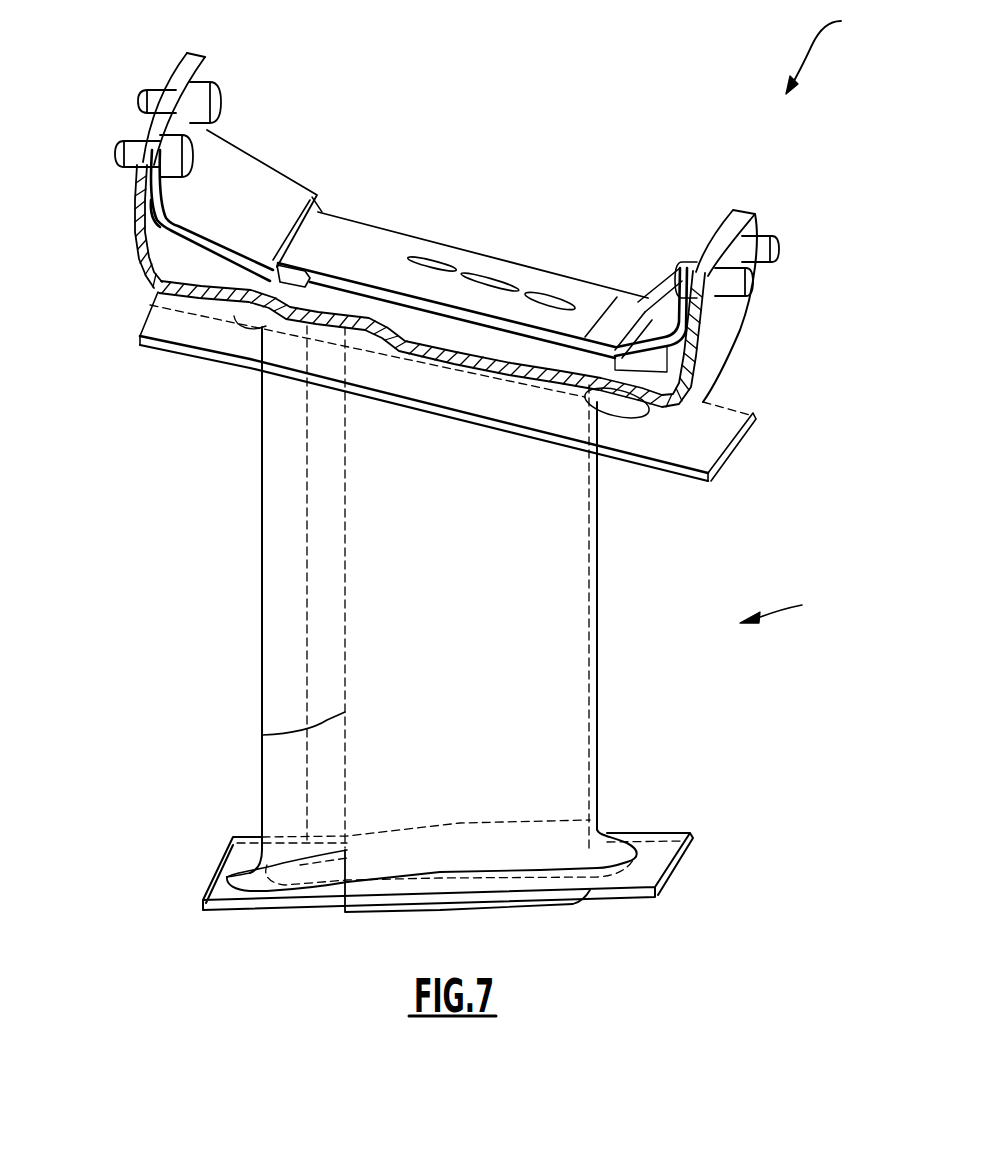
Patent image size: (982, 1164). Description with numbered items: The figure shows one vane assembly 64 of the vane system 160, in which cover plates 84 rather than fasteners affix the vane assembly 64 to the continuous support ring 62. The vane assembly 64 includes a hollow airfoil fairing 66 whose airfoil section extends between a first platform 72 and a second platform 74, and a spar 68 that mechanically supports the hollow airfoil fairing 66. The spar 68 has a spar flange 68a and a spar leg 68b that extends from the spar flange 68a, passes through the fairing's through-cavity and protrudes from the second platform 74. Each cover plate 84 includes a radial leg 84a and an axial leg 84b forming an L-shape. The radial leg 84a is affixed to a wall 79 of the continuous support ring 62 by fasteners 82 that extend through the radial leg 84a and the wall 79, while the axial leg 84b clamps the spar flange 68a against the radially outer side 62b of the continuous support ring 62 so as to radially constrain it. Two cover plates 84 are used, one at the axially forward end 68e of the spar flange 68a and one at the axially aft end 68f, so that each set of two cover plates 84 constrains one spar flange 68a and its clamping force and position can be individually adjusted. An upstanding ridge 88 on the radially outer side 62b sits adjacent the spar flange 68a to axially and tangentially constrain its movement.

The vane system 160 is at (834, 50).
The continuous support ring 62 is at (188, 56).
The radially outer side 62b is at (183, 270).
The vane assembly 64 is at (785, 606).
The hollow airfoil fairing 66 is at (323, 613).
The spar 68 is at (410, 230).
The spar flange 68a is at (457, 253).
The spar leg 68b is at (263, 735).
The axially forward end 68e is at (320, 208).
The axially aft end 68f is at (620, 300).
The first platform 72 is at (715, 438).
The second platform 74 is at (657, 863).
The wall 79 is at (135, 190).
The fasteners 82 is at (115, 147).
The cover plate 84 is at (240, 160).
The radial leg 84a is at (182, 118).
The axial leg 84b is at (268, 195).
The upstanding ridge 88 is at (250, 305).